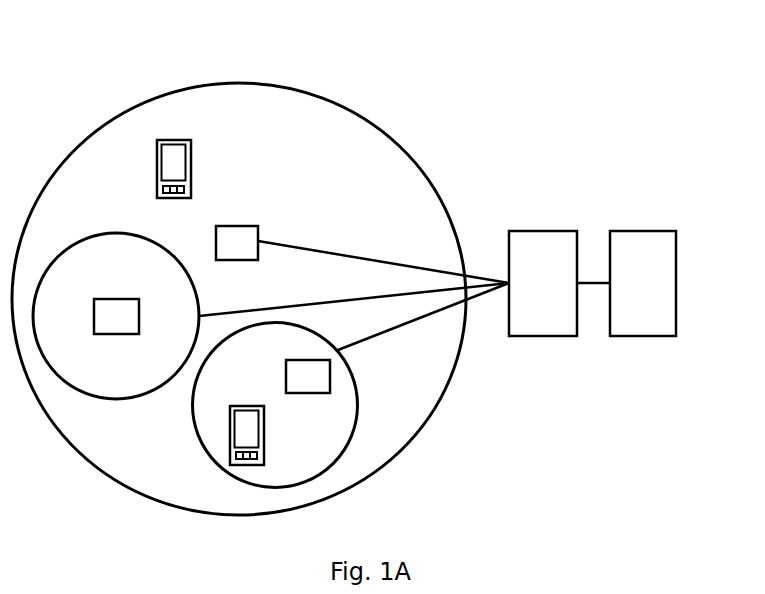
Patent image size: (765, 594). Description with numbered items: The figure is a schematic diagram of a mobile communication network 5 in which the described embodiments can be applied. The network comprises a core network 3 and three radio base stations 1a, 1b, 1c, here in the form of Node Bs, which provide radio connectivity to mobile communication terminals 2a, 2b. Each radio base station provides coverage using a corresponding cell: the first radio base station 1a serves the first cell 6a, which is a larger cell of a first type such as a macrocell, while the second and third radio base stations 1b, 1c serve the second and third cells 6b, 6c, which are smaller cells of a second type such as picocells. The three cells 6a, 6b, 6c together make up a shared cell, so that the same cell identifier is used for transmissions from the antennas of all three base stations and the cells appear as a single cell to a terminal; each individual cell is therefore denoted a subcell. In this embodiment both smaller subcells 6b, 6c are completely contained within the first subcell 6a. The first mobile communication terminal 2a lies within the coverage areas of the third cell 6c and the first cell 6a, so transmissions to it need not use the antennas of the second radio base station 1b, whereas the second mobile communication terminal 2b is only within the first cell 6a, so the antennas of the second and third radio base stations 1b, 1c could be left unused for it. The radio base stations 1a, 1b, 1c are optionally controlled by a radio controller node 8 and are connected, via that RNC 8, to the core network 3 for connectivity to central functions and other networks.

The mobile communication network 5 is at (525, 72).
The first cell 6a is at (372, 122).
The second cell 6b is at (74, 388).
The third cell 6c is at (241, 481).
The first radio base station 1a is at (226, 254).
The second radio base station 1b is at (105, 328).
The third radio base station 1c is at (297, 388).
The first mobile communication terminal 2a is at (266, 438).
The second mobile communication terminal 2b is at (192, 160).
The radio controller node 8 is at (537, 280).
The core network 3 is at (637, 280).